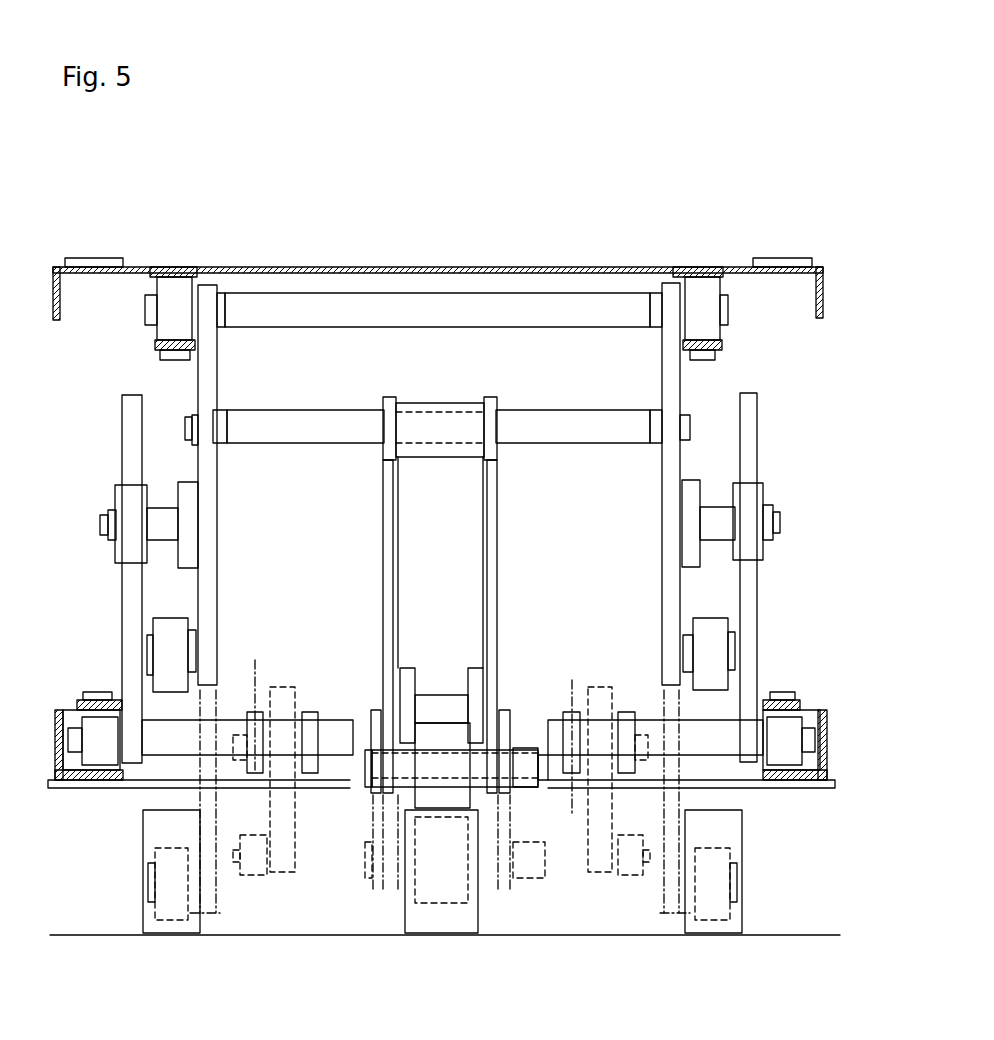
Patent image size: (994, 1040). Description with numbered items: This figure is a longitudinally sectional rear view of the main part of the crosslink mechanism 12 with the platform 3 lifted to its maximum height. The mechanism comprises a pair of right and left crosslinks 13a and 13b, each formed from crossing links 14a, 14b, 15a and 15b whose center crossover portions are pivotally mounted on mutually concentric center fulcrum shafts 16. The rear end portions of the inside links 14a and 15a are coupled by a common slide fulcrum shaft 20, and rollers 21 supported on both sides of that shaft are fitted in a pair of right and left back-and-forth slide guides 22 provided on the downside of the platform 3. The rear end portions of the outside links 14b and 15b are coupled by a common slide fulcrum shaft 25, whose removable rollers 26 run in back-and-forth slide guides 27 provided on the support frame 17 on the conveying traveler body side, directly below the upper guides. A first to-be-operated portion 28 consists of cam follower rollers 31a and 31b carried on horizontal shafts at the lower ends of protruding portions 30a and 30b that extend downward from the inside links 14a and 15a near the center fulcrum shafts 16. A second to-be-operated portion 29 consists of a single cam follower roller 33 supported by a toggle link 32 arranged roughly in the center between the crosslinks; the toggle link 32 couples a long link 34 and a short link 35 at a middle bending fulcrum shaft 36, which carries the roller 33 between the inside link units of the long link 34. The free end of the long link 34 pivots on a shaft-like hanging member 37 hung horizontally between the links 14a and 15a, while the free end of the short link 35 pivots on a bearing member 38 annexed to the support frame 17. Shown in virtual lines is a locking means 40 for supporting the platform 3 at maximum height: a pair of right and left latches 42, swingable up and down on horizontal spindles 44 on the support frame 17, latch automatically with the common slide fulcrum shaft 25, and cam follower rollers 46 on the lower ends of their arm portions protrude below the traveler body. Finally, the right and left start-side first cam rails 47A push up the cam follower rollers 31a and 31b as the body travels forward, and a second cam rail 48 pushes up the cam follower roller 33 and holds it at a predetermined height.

The platform 3 is at (466, 267).
The crosslink mechanism 12 is at (316, 292).
The common slide fulcrum shaft 20 is at (567, 308).
The rollers 21 is at (174, 295).
The back-and-forth slide guides 22 is at (152, 346).
The link 14a is at (208, 372).
The link 14b is at (130, 455).
The link 15a is at (668, 372).
The link 15b is at (750, 602).
The crosslink 13a is at (220, 480).
The crosslink 13b is at (663, 503).
The shaft-like hanging member 37 is at (336, 425).
The toggle link 32 is at (498, 537).
The long link 34 is at (385, 552).
The short link 35 is at (370, 712).
The bearing member 38 is at (472, 682).
The cam follower roller 33 is at (437, 793).
The middle bending fulcrum shaft 36 is at (358, 768).
The second to-be-operated portion 29 is at (493, 798).
The second cam rail 48 is at (462, 920).
The support frame 17 is at (797, 788).
The rollers 26 is at (90, 740).
The back-and-forth slide guides 27 is at (90, 692).
The common slide fulcrum shaft 25 is at (172, 740).
The latches 42 is at (285, 800).
The horizontal spindles 44 is at (258, 660).
The cam follower rollers 46 is at (255, 876).
The locking means 40 is at (290, 880).
The start-side first cam rails 47A is at (163, 825).
The center fulcrum shafts 16 is at (165, 527).
The protruding portion 30a is at (208, 645).
The protruding portion 30b is at (668, 615).
The first to-be-operated portion 28 is at (158, 612).
The cam follower roller 31a is at (165, 627).
The cam follower roller 31b is at (713, 628).